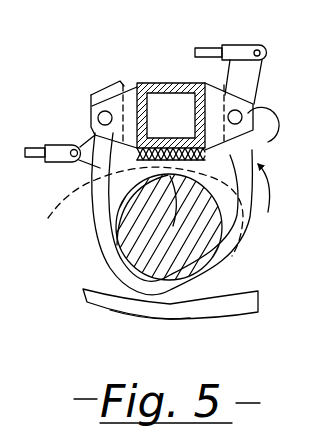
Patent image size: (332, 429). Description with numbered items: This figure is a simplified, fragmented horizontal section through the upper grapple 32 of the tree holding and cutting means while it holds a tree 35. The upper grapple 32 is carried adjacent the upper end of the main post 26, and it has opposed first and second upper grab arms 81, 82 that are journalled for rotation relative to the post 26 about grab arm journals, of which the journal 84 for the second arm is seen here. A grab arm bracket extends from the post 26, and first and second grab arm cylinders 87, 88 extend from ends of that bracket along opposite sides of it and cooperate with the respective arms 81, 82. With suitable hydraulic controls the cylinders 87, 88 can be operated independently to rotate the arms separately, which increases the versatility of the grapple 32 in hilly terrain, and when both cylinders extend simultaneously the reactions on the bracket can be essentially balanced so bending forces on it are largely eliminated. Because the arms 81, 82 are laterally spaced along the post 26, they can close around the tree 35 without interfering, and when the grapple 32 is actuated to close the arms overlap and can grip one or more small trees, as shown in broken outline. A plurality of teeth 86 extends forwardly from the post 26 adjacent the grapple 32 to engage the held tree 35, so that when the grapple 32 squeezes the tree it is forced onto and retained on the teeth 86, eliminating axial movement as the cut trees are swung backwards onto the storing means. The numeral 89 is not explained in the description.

The main post 26 is at (170, 78).
The teeth 86 is at (181, 112).
The first grab arm cylinder 87 is at (25, 153).
The second grab arm cylinder 88 is at (209, 48).
The tree 35 is at (110, 257).
The grab arm journal 84 is at (216, 285).
The upper grapple 32 is at (240, 241).
The second upper grab arm 82 is at (95, 308).
The first upper grab arm 81 is at (148, 326).
The assembly 89 is at (0, 386).